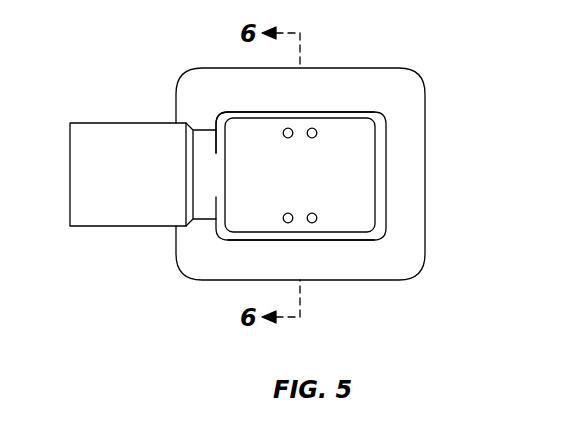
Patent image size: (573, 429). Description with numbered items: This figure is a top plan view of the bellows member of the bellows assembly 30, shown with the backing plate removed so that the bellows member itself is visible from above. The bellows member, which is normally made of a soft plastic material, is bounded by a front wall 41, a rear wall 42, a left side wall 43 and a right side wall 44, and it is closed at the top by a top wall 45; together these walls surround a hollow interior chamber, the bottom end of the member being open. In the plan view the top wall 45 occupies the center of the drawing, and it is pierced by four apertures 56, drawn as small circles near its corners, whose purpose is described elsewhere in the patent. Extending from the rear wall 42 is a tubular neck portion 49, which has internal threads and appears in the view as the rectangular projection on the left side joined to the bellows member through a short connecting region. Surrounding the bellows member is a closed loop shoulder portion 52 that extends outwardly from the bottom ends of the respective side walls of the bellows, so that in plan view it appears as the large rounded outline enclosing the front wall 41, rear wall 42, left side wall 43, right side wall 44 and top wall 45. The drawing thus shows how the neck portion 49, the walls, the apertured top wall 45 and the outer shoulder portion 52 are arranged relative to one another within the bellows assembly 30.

The bellows assembly 30 is at (130, 92).
The closed loop shoulder portion 52 is at (397, 80).
The tubular neck portion 49 is at (143, 174).
The front wall 41 is at (386, 173).
The top wall 45 is at (300, 175).
The apertures 56 is at (312, 127).
The left side wall 43 is at (257, 110).
The rear wall 42 is at (214, 230).
The right side wall 44 is at (300, 241).